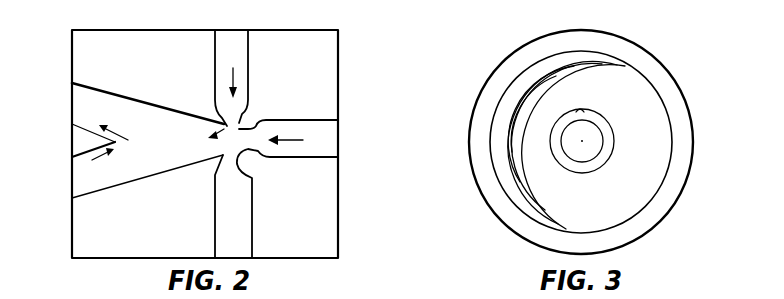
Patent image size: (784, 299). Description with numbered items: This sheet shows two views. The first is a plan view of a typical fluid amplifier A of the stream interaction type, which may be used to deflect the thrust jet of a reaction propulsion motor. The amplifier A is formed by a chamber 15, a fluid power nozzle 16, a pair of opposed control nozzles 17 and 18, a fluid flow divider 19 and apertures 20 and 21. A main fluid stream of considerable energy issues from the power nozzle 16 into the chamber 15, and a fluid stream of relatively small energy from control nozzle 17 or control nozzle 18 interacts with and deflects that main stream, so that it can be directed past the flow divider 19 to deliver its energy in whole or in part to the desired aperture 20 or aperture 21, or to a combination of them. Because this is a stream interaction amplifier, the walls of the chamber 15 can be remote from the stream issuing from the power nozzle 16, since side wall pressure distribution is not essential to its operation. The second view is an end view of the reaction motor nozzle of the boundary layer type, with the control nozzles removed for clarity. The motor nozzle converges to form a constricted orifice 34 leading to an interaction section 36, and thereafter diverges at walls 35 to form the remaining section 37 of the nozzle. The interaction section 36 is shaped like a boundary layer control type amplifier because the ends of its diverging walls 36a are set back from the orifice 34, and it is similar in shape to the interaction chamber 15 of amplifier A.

In FIG. 2, the fluid amplifier A is at (335, 91).
In FIG. 2, the chamber 15 is at (172, 137).
In FIG. 2, the fluid power nozzle 16 is at (261, 125).
In FIG. 2, the control nozzle 17 is at (238, 120).
In FIG. 2, the control nozzle 18 is at (248, 173).
In FIG. 2, the fluid flow divider 19 is at (82, 142).
In FIG. 2, the aperture 20 is at (82, 182).
In FIG. 2, the aperture 21 is at (80, 99).
In FIG. 3, the constricted orifice 34 is at (590, 158).
In FIG. 3, the diverging walls 35 is at (641, 152).
In FIG. 3, the interaction section 36 is at (593, 133).
In FIG. 3, the diverging walls 36a is at (583, 113).
In FIG. 3, the remaining section 37 is at (492, 83).